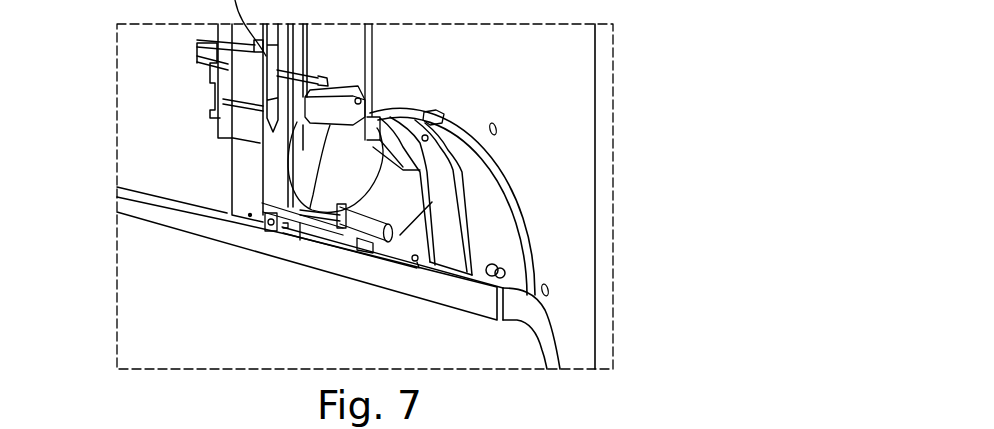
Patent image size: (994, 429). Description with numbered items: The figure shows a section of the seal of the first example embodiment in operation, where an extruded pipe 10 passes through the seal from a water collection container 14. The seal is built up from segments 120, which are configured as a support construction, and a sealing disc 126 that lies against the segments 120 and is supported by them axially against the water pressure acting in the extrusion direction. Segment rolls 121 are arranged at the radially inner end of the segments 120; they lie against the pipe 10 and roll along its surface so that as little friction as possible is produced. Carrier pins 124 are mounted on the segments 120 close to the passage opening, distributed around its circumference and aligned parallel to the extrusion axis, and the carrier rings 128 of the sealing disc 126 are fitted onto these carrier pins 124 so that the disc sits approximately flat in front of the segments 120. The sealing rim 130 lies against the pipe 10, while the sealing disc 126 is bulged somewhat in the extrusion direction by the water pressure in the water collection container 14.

The pipe 10 is at (553, 343).
The water collection container 14 is at (583, 316).
The segments 120 is at (277, 142).
The segment rolls 121 is at (295, 222).
The carrier pins 124 is at (360, 212).
The sealing disc 126 is at (360, 172).
The carrier rings 128 is at (345, 207).
The sealing rim 130 is at (305, 232).